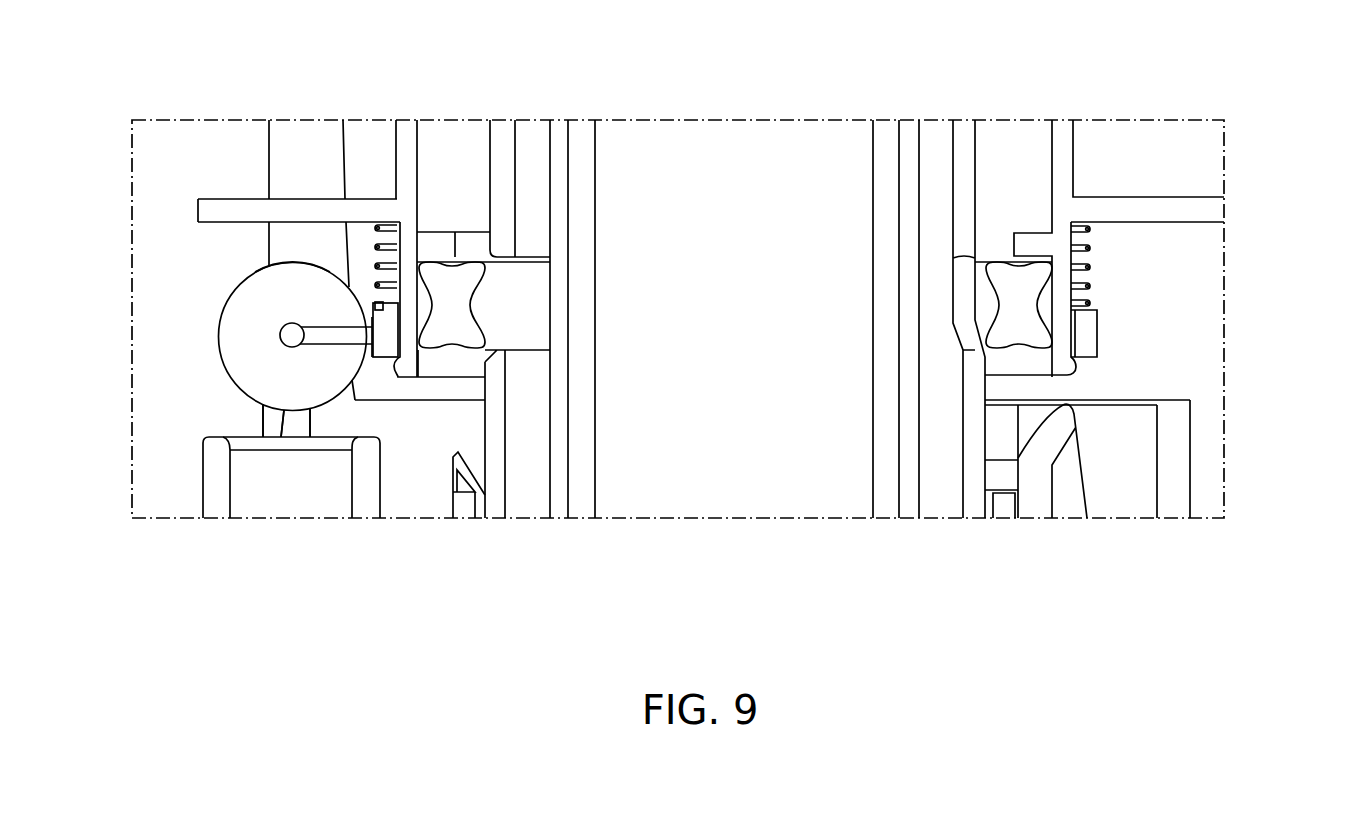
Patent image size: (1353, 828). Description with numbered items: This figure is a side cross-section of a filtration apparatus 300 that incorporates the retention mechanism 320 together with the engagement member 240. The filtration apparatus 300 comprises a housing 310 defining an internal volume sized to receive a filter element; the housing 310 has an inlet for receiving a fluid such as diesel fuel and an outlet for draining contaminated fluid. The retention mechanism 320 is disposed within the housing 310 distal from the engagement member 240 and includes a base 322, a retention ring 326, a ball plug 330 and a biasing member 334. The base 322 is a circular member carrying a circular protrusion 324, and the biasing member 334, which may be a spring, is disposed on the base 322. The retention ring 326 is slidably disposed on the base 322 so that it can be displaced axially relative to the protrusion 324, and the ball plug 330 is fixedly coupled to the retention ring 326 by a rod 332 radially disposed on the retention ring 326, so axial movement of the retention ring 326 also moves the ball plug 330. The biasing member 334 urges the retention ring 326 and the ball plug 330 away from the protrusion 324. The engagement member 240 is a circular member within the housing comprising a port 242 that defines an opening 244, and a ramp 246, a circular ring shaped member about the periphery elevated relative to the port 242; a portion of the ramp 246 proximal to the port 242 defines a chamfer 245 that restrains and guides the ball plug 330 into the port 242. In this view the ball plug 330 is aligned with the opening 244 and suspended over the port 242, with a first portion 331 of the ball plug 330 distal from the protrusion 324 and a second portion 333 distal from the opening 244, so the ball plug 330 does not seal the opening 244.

The filtration apparatus 300 is at (470, 98).
The housing 310 is at (1180, 305).
The retention mechanism 320 is at (310, 152).
The base 322 is at (413, 127).
The protrusion 324 is at (207, 210).
The retention ring 326 is at (383, 317).
The ball plug 330 is at (235, 360).
The first portion of the ball plug 331 is at (293, 272).
The rod 332 is at (280, 342).
The second portion of the ball plug 333 is at (257, 403).
The biasing member 334 is at (377, 267).
The engagement member 240 is at (190, 492).
The port 242 is at (362, 500).
The opening 244 is at (258, 442).
The chamfer 245 is at (300, 422).
The ramp 246 is at (1173, 438).